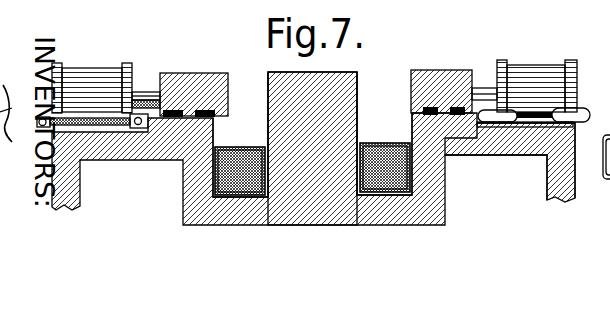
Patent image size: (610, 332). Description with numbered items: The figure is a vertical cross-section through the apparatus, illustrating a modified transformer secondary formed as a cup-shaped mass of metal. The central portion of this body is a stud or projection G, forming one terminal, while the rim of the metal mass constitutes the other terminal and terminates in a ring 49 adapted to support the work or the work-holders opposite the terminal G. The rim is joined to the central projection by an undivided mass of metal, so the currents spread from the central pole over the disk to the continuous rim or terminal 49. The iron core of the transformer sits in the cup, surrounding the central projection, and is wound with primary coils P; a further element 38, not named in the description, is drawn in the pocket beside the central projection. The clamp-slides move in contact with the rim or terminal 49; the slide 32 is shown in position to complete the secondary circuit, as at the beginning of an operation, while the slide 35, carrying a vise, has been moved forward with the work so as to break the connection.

The slide 35 is at (205, 73).
The slide 32 is at (435, 72).
The stud or projection G is at (346, 73).
The primary wires or coils P is at (228, 122).
The packing block in pocket 38 is at (226, 163).
The ring 49 is at (446, 158).